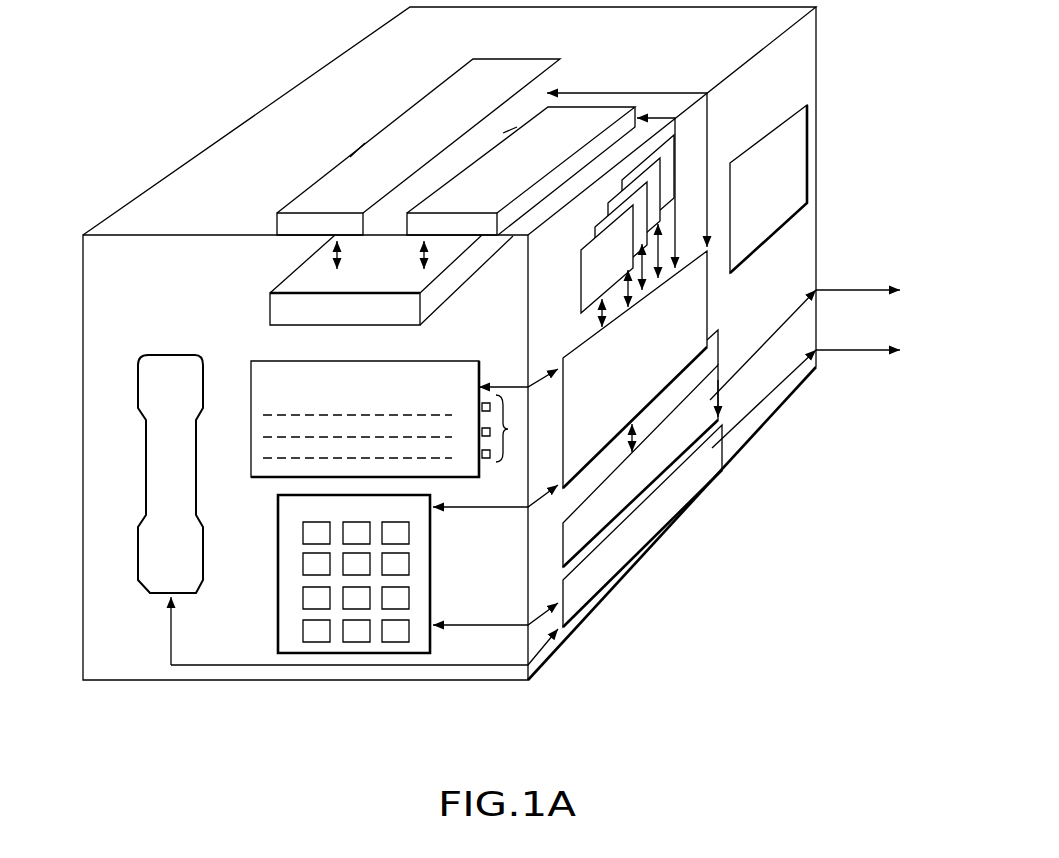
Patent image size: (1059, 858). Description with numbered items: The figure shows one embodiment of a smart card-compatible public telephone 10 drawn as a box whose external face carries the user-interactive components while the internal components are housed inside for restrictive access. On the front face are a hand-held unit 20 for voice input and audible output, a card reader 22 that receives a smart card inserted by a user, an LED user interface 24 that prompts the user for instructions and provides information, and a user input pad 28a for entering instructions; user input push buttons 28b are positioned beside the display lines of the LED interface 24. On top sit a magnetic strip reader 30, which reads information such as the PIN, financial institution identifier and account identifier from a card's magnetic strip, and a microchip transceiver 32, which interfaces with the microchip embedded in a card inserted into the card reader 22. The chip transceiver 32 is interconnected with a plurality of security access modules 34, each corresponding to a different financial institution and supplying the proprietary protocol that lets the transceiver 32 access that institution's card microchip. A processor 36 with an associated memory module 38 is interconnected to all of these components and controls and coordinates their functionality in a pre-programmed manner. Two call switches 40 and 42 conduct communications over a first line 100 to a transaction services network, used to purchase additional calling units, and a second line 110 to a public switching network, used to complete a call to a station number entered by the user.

The public telephone 10 is at (78, 262).
The hand-held unit 20 is at (157, 484).
The card reader 22 is at (270, 300).
The LED user interface 24 is at (250, 408).
The user input pad 28a is at (366, 653).
The user input push buttons 28b is at (517, 428).
The magnetic strip reader 30 is at (450, 94).
The microchip transceiver 32 is at (615, 107).
The security access modules 34 is at (666, 192).
The processor 36 is at (700, 298).
The memory module 38 is at (790, 142).
The call switch 40 is at (722, 425).
The call switch 42 is at (707, 438).
The first line 100 is at (864, 226).
The second line 110 is at (865, 405).